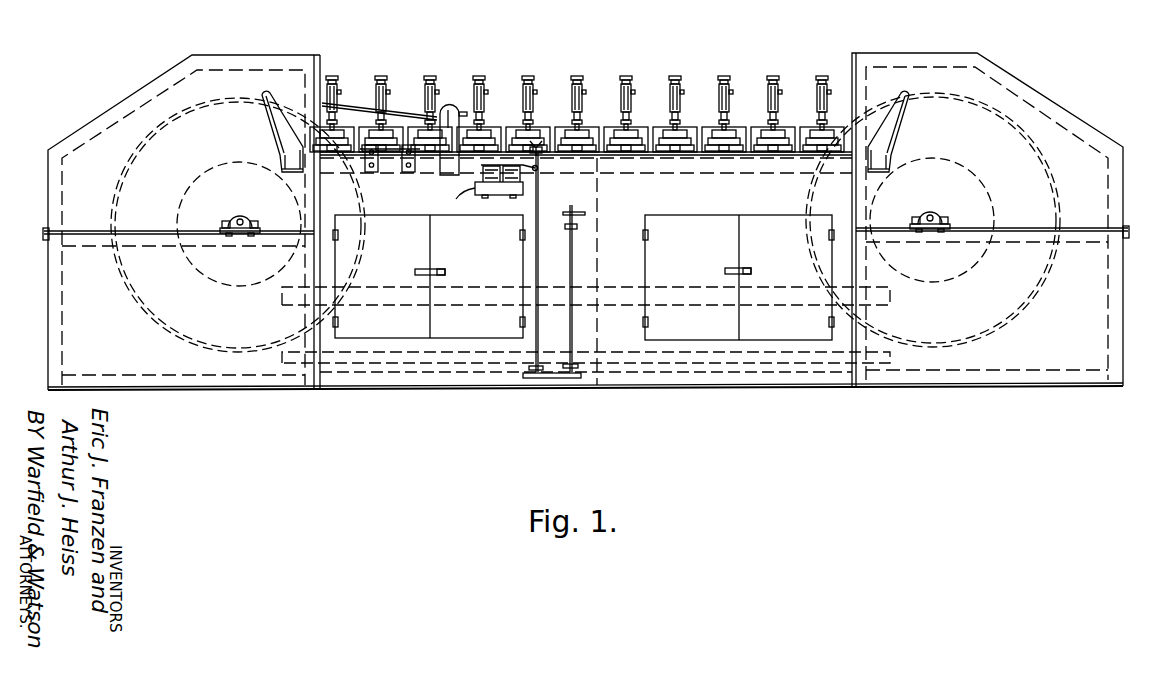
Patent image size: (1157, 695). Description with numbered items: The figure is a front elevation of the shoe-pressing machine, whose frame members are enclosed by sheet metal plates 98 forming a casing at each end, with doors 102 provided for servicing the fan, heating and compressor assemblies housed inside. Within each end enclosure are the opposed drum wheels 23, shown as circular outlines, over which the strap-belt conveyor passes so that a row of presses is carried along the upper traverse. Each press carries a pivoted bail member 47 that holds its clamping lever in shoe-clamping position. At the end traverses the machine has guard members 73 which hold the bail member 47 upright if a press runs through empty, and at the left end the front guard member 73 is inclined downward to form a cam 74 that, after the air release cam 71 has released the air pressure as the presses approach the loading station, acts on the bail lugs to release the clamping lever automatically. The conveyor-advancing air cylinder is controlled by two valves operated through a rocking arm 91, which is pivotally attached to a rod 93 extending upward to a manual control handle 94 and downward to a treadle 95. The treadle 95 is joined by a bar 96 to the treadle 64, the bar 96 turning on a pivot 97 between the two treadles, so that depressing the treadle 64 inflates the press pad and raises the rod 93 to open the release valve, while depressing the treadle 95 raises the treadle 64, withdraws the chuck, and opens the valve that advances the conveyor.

The sheet metal plates 98 is at (143, 121).
The guard member 73 is at (1032, 137).
The drum wheel 23 is at (183, 191).
The bail member 47 is at (383, 88).
The cam 74 is at (408, 110).
The air release cam 71 is at (395, 153).
The rocking arm 91 is at (537, 170).
The manual control handle 94 is at (533, 151).
The rod 93 is at (536, 253).
The treadle 64 is at (570, 281).
The bar 96 is at (541, 379).
The pivot 97 is at (548, 380).
The treadle 95 is at (568, 380).
The door 102 is at (478, 275).